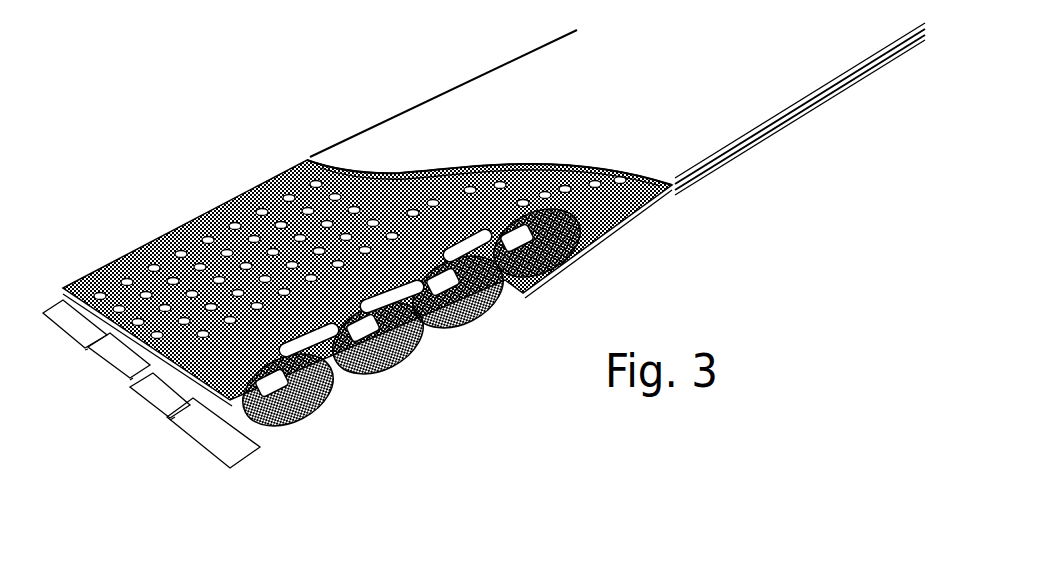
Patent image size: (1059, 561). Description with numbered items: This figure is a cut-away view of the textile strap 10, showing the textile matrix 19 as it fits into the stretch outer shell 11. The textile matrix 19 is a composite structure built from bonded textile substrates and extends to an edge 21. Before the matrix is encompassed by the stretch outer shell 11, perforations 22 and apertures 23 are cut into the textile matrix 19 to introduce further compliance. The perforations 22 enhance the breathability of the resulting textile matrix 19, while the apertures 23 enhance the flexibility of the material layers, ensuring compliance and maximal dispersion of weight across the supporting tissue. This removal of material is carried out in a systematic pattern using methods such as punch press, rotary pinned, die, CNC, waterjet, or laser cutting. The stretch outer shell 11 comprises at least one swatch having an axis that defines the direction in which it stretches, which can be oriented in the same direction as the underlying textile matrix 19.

The textile strap 10 is at (212, 72).
The stretch outer shell 11 is at (681, 107).
The textile matrix 19 is at (110, 262).
The edge 21 is at (182, 222).
The perforations 22 is at (252, 188).
The apertures 23 is at (500, 200).